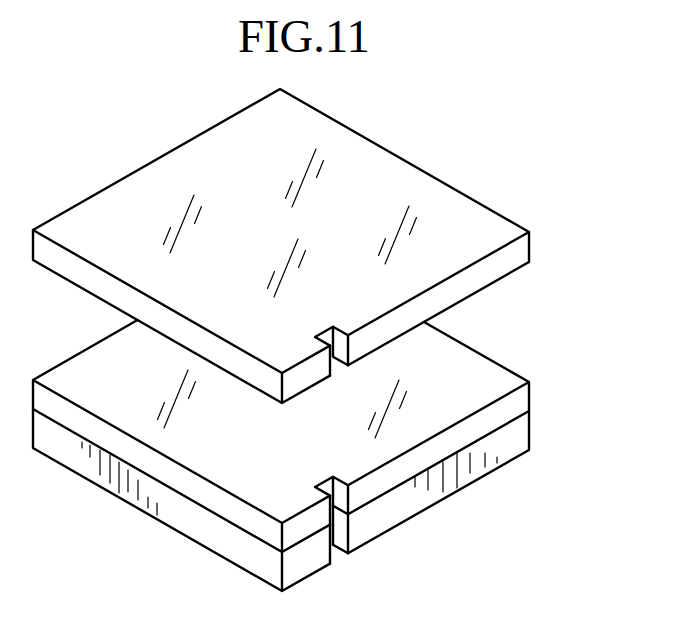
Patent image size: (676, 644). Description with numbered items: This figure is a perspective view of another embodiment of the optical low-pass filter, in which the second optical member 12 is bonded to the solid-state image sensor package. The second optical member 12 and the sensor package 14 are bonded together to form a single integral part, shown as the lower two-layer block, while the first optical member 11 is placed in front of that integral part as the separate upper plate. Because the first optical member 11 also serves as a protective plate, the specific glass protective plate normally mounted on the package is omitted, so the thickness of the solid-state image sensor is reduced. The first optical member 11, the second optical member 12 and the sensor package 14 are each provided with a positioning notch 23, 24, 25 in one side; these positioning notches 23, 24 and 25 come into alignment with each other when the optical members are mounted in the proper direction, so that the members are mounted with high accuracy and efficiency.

The first optical member 11 is at (468, 222).
The second optical member 12 is at (472, 368).
The sensor package 14 is at (510, 440).
The positioning notch 23 is at (320, 337).
The positioning notch 24 is at (320, 487).
The positioning notch 25 is at (350, 535).